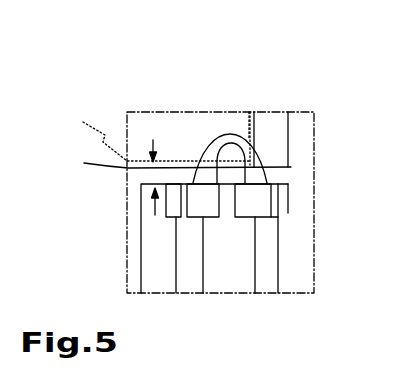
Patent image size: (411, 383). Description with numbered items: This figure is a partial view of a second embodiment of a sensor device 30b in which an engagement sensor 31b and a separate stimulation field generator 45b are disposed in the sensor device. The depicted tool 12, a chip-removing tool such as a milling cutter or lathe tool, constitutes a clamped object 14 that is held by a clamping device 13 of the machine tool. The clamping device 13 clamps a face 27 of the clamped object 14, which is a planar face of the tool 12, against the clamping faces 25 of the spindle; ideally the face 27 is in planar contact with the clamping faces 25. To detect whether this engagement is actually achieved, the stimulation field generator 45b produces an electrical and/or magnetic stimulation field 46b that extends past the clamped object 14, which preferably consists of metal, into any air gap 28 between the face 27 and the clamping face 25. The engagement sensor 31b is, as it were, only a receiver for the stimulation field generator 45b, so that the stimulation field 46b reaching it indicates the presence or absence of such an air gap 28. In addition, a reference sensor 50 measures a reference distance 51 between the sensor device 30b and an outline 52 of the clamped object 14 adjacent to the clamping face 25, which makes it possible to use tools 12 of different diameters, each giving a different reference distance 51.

The tool 12 is at (127, 138).
The clamping device 13 is at (310, 152).
The clamped object 14 is at (143, 113).
The clamping faces 25 is at (254, 112).
The face of the clamped object 27 is at (249, 112).
The air gap 28 is at (250, 112).
The stimulation field 46b is at (256, 152).
The reference distance 51 is at (174, 158).
The outline of the clamped object 52 is at (187, 168).
The sensor device 30b is at (135, 257).
The reference sensor 50 is at (172, 217).
The stimulation field generator 45b is at (212, 217).
The engagement sensor 31b is at (288, 213).